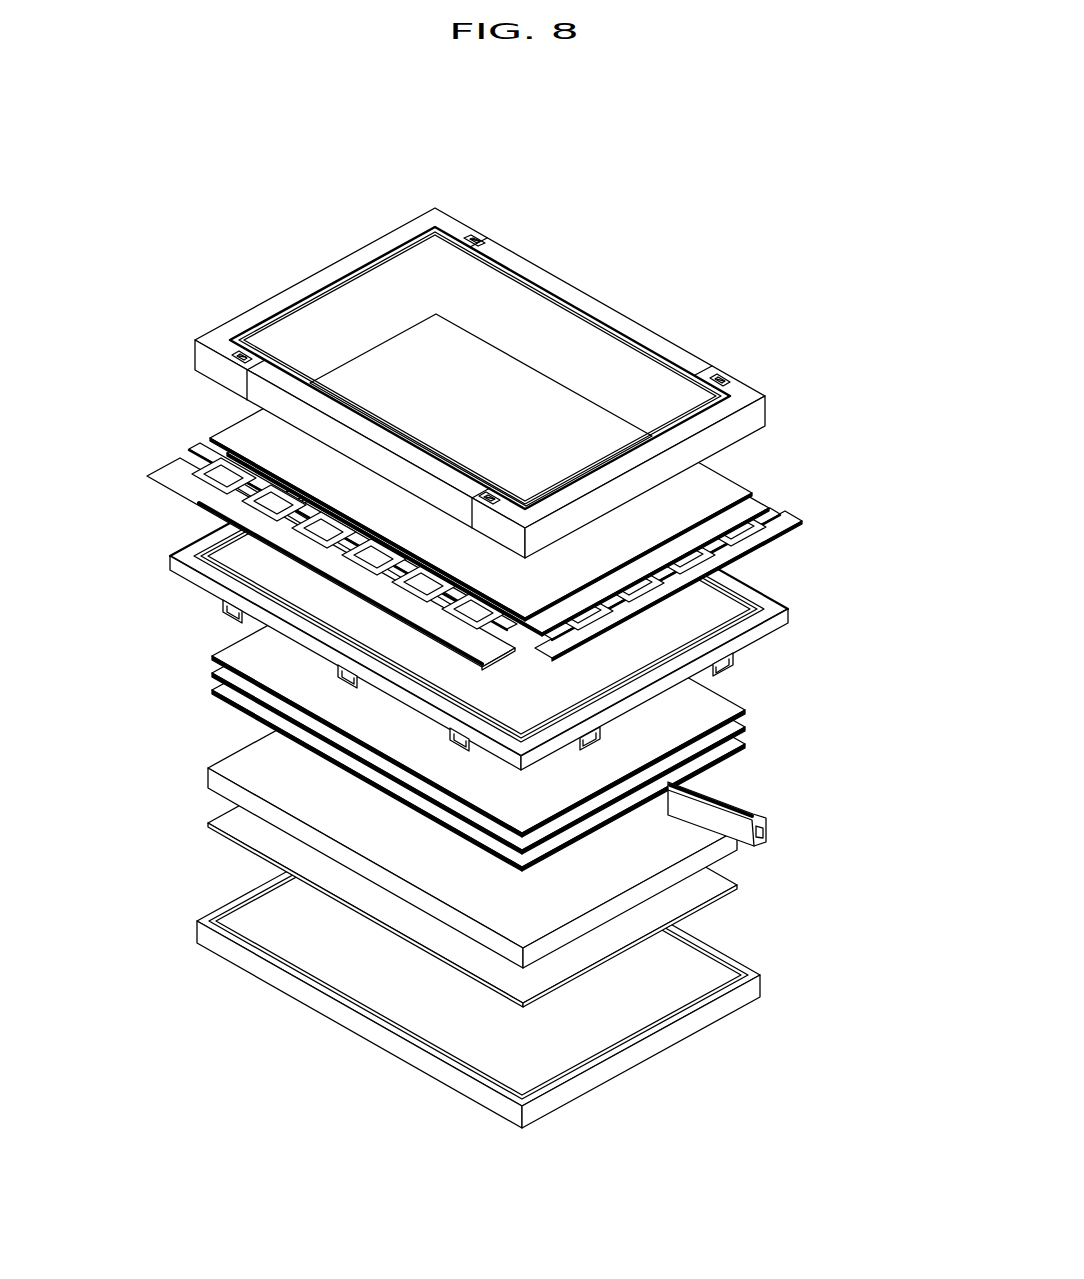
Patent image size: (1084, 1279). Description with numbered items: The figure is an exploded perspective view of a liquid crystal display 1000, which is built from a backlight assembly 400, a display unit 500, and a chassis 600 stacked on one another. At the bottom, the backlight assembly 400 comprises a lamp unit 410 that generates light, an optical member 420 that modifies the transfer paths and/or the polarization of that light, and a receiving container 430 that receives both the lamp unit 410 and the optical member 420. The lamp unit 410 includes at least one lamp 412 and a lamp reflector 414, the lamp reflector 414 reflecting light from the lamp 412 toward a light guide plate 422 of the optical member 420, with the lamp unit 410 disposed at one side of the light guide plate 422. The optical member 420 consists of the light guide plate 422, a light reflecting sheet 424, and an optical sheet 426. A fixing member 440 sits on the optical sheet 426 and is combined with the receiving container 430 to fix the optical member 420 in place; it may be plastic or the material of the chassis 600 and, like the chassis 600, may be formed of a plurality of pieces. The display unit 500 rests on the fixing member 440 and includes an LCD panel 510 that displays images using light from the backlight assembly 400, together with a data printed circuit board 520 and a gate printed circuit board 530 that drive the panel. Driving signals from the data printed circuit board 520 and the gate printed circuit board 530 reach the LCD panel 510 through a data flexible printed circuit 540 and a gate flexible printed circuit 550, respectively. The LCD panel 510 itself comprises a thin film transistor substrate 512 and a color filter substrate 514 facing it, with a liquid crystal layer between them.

The liquid crystal display 1000 is at (682, 214).
The chassis 600 is at (289, 296).
The display unit 500 is at (220, 417).
The LCD panel 510 is at (847, 450).
The thin film transistor substrate 512 is at (757, 507).
The color filter substrate 514 is at (718, 485).
The data printed circuit board 520 is at (178, 472).
The gate printed circuit board 530 is at (785, 523).
The data flexible printed circuit 540 is at (203, 448).
The gate flexible printed circuit 550 is at (740, 537).
The backlight assembly 400 is at (889, 622).
The lamp unit 410 is at (843, 775).
The lamp 412 is at (762, 825).
The lamp reflector 414 is at (732, 800).
The optical member 420 is at (150, 782).
The light guide plate 422 is at (232, 767).
The light reflecting sheet 424 is at (232, 822).
The optical sheet 426 is at (207, 657).
The receiving container 430 is at (750, 970).
The fixing member 440 is at (208, 534).